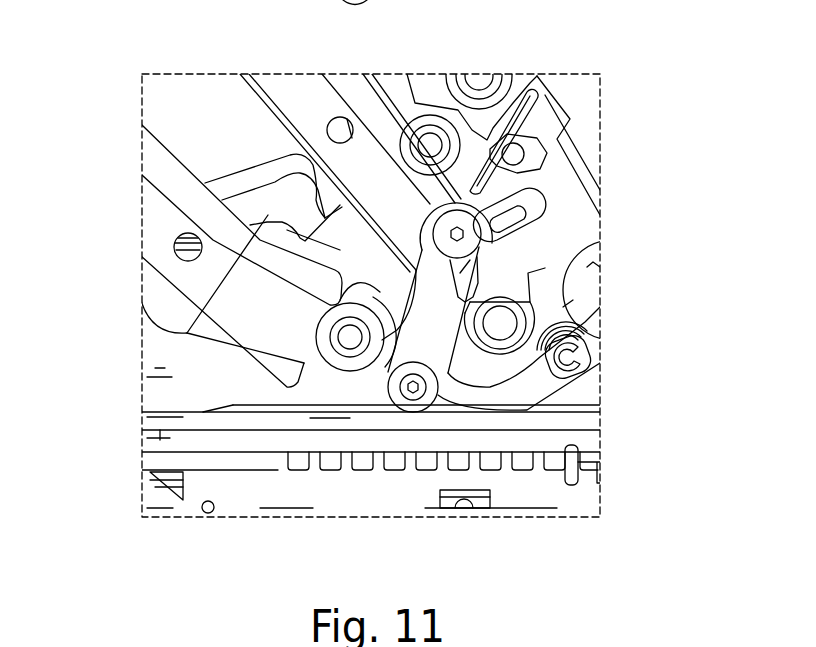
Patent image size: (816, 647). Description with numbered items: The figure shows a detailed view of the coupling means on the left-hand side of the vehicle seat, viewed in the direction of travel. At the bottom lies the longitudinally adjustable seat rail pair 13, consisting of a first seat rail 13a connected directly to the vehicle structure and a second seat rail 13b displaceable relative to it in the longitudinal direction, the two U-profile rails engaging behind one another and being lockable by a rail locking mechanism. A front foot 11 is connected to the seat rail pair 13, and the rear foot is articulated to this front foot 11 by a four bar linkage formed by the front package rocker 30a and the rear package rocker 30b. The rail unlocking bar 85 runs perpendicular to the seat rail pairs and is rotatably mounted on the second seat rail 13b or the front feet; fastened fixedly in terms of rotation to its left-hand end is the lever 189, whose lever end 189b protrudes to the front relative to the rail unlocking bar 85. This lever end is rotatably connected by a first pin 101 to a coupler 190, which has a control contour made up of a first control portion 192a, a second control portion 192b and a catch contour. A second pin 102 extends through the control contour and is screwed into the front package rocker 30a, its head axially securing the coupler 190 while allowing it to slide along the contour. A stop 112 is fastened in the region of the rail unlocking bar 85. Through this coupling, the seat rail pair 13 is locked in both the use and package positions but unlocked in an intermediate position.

The front package rocker 30a is at (163, 230).
The rear package rocker 30b is at (303, 105).
The second pin 102 is at (462, 227).
The coupler 190 is at (460, 195).
The second control portion 192b is at (475, 220).
The first control portion 192a is at (463, 283).
The rail unlocking bar 85 is at (583, 315).
The lever 189 is at (595, 328).
The stop 112 is at (590, 360).
The second seat rail 13b is at (583, 442).
The seat rail pair 13 is at (619, 474).
The front foot 11 is at (228, 382).
The first seat rail 13a is at (295, 482).
The first pin 101 is at (423, 400).
The lever end 189b is at (510, 397).